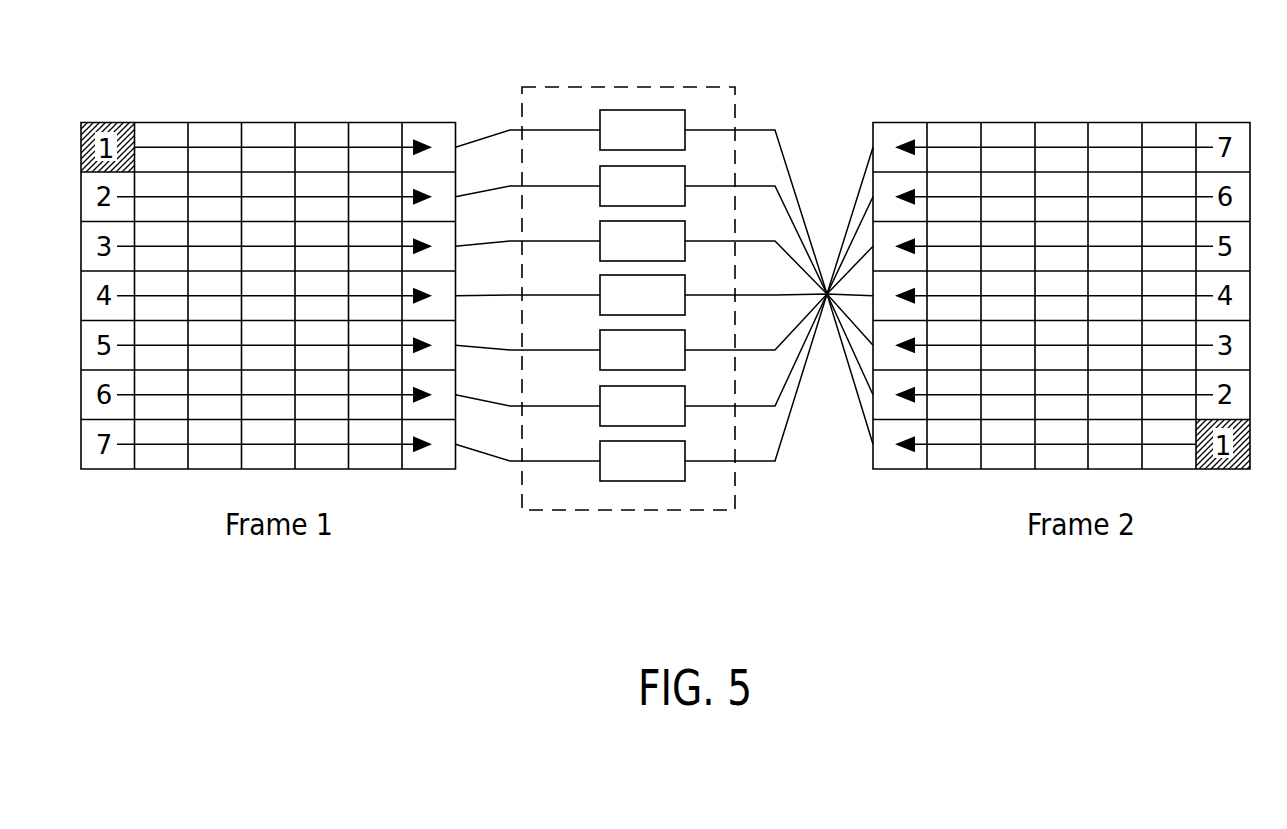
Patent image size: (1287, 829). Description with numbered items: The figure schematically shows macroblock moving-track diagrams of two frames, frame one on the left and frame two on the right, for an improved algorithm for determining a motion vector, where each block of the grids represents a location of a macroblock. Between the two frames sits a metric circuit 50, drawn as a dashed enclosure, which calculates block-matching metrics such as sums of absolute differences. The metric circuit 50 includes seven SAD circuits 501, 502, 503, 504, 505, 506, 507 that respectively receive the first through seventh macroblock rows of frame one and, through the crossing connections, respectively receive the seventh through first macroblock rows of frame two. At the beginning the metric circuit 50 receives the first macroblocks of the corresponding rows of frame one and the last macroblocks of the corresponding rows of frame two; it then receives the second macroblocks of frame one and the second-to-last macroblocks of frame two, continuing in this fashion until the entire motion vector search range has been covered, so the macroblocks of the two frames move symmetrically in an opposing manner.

The metric circuit 50 is at (621, 87).
The SAD circuit 501 is at (600, 143).
The SAD circuit 502 is at (600, 199).
The SAD circuit 503 is at (600, 254).
The SAD circuit 504 is at (600, 308).
The SAD circuit 505 is at (600, 363).
The SAD circuit 506 is at (600, 419).
The SAD circuit 507 is at (600, 474).